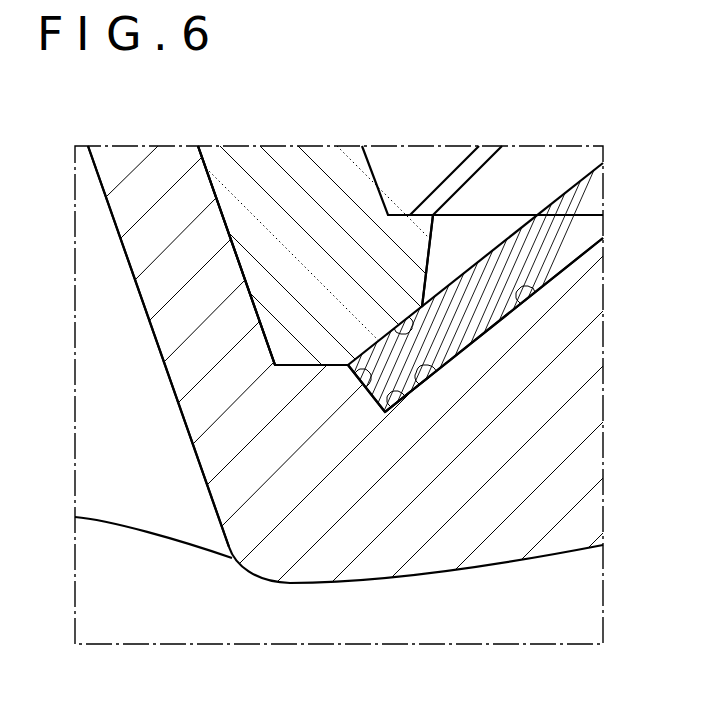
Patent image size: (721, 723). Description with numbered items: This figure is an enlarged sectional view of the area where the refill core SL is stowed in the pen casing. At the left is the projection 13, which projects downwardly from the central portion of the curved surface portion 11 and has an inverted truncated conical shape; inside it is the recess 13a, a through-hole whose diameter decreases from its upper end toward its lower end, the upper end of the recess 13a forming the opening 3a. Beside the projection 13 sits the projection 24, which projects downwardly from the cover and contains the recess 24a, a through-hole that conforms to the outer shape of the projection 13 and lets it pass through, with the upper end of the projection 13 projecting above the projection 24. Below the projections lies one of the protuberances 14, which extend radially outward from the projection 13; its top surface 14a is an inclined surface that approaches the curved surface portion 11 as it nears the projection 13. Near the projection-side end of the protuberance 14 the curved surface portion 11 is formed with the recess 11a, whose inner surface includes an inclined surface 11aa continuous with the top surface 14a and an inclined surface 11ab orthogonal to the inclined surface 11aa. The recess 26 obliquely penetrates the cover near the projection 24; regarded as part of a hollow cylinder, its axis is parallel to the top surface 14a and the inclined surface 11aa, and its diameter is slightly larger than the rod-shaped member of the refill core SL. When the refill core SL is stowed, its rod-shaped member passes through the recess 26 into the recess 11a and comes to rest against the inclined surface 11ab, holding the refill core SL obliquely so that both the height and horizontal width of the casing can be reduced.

The curved surface portion 11 is at (543, 455).
The recess 11a is at (390, 416).
The inclined surface 11aa is at (421, 382).
The inclined surface 11ab is at (372, 387).
The projection 13 is at (145, 180).
The recess 13a is at (198, 467).
The protuberance 14 is at (527, 345).
The top surface 14a is at (535, 290).
The projection 24 is at (292, 198).
The recess 24a is at (218, 222).
The recess 26 is at (413, 318).
The refill core SL is at (552, 232).
The opening 3a is at (138, 548).